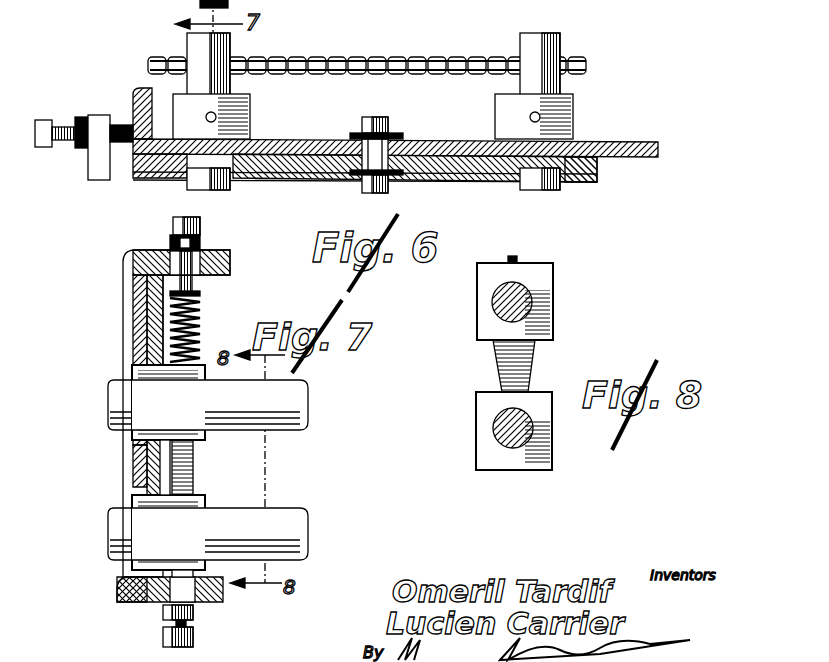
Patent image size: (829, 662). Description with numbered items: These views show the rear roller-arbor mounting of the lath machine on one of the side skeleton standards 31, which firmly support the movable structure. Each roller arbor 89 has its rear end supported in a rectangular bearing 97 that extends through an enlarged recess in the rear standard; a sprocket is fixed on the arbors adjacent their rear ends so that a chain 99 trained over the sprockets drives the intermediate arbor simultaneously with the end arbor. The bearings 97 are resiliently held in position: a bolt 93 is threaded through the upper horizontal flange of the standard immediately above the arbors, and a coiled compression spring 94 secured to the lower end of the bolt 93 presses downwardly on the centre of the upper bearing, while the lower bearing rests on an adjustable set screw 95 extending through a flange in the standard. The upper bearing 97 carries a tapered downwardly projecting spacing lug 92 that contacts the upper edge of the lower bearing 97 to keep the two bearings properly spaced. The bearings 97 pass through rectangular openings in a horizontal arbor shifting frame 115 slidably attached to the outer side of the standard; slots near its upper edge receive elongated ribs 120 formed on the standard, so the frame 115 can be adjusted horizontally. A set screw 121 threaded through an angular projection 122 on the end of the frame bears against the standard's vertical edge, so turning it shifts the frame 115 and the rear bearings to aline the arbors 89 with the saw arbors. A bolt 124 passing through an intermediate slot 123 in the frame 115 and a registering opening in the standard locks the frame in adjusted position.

In FIG. 7, the side skeleton standard 31 is at (147, 603).
In FIG. 6, the roller arbor 89 is at (527, 47).
In FIG. 7, the roller arbor 89 is at (293, 403).
In FIG. 8, the roller arbor 89 is at (518, 302).
In FIG. 7, the spacing lug 92 is at (193, 483).
In FIG. 8, the spacing lug 92 is at (533, 365).
In FIG. 7, the bolt 93 is at (173, 222).
In FIG. 7, the coiled compression spring 94 is at (200, 318).
In FIG. 6, the adjustable set screw 95 is at (172, 1).
In FIG. 7, the adjustable set screw 95 is at (193, 638).
In FIG. 6, the rear bearing 97 is at (263, 103).
In FIG. 7, the rear bearing 97 is at (188, 427).
In FIG. 8, the rear bearing 97 is at (485, 323).
In FIG. 6, the chain 99 is at (320, 63).
In FIG. 6, the arbor shifting frame 115 is at (460, 173).
In FIG. 7, the arbor shifting frame 115 is at (133, 465).
In FIG. 6, the elongated rib 120 is at (552, 180).
In FIG. 7, the elongated rib 120 is at (142, 310).
In FIG. 6, the set screw 121 is at (40, 147).
In FIG. 6, the angular projection 122 is at (97, 127).
In FIG. 6, the intermediate slot 123 is at (410, 140).
In FIG. 6, the bolt 124 is at (347, 143).